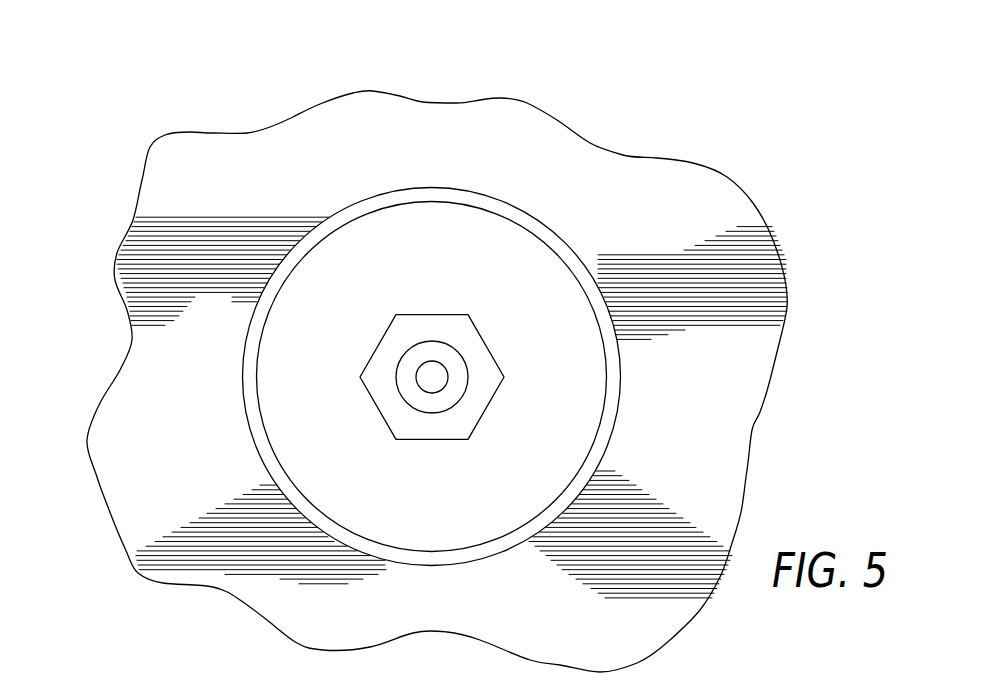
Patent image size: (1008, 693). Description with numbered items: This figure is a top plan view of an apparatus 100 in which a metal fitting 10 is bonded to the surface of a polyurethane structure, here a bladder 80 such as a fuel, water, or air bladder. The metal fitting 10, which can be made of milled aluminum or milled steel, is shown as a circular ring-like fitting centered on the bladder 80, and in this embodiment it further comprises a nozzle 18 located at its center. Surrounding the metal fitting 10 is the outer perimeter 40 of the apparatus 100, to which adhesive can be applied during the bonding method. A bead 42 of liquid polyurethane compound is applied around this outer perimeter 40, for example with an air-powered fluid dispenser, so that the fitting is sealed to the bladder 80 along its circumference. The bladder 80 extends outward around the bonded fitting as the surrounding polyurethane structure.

The apparatus 100 is at (194, 107).
The bladder 80 is at (703, 202).
The metal fitting 10 is at (580, 373).
The outer perimeter 40 is at (608, 395).
The bead 42 is at (609, 445).
The nozzle 18 is at (444, 360).